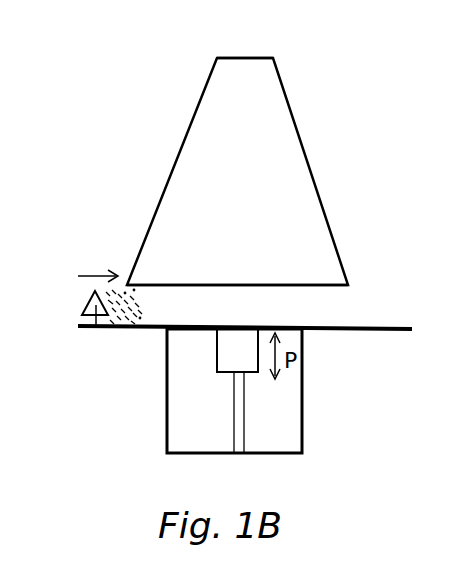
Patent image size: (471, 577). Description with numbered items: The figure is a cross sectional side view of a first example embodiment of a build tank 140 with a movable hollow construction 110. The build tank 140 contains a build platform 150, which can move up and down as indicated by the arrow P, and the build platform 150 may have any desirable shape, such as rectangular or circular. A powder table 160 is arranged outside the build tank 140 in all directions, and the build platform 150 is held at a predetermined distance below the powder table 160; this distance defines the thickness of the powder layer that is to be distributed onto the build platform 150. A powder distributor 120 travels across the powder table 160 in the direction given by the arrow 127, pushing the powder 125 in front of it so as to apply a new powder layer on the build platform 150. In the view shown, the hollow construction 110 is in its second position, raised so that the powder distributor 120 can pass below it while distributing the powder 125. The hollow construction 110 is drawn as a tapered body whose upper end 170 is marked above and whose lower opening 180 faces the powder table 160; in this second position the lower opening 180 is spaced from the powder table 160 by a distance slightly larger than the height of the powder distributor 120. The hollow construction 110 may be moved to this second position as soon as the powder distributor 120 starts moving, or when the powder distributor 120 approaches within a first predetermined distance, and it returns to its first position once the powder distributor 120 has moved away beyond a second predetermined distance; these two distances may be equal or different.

The hollow construction 110 is at (298, 175).
The powder distributor 120 is at (62, 304).
The powder 125 is at (120, 332).
The arrow 127 is at (96, 270).
The build tank 140 is at (303, 413).
The build platform 150 is at (193, 323).
The powder table 160 is at (358, 327).
The top surface 170 is at (247, 60).
The lower opening 180 is at (172, 279).